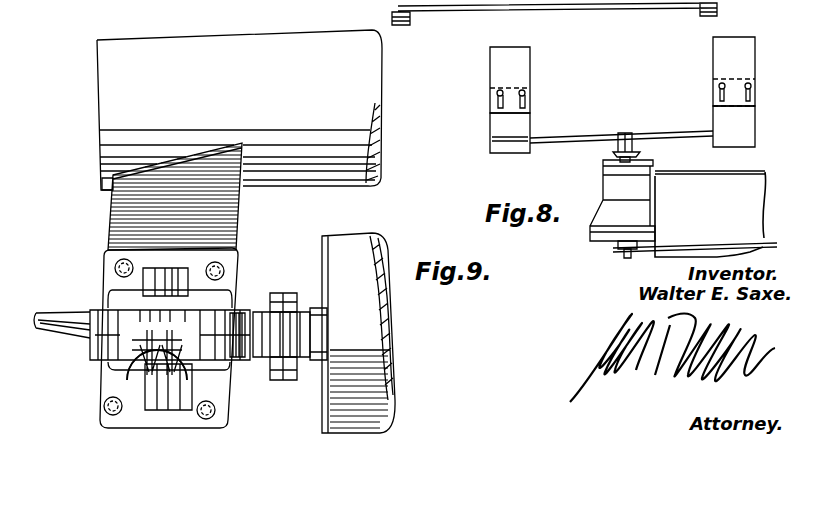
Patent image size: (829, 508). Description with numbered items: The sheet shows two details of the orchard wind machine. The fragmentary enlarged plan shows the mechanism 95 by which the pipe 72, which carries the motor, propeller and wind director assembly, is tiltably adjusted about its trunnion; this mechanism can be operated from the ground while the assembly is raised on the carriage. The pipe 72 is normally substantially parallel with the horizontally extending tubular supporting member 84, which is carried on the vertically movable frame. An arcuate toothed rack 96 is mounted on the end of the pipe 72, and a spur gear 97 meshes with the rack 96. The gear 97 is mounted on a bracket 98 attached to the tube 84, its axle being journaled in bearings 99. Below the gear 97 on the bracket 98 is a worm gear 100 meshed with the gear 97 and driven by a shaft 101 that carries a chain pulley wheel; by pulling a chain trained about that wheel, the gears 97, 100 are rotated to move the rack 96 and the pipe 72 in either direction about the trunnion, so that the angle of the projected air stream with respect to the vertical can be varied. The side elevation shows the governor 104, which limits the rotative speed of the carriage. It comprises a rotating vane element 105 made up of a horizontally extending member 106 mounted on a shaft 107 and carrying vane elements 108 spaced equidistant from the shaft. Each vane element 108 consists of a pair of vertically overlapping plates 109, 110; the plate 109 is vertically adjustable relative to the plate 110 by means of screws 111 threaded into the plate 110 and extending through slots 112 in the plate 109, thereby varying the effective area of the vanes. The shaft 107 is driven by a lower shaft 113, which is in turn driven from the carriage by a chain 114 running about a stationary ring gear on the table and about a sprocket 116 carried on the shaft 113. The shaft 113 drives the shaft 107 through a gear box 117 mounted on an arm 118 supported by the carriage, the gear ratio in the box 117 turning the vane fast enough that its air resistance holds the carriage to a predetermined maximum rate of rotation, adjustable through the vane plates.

In FIG. 9, the tubular supporting member 84 is at (297, 42).
In FIG. 9, the bracket 98 is at (112, 220).
In FIG. 9, the tilting mechanism 95 is at (250, 276).
In FIG. 9, the bearings 99 is at (143, 277).
In FIG. 9, the shaft 101 is at (55, 318).
In FIG. 9, the spur gear 97 is at (95, 360).
In FIG. 9, the worm gear 100 is at (135, 356).
In FIG. 9, the arcuate toothed rack 96 is at (250, 355).
In FIG. 9, the pipe 72 is at (362, 238).
In FIG. 8, the governor 104 is at (653, 112).
In FIG. 8, the rotating vane element 105 is at (578, 144).
In FIG. 8, the horizontally extending member 106 is at (590, 137).
In FIG. 8, the shaft 107 is at (633, 140).
In FIG. 8, the vane elements 108 is at (764, 95).
In FIG. 8, the upper plate 109 is at (531, 75).
In FIG. 8, the lower plate 110 is at (529, 126).
In FIG. 8, the screws 111 is at (497, 92).
In FIG. 8, the slots 112 is at (497, 104).
In FIG. 8, the lower shaft 113 is at (626, 259).
In FIG. 8, the chain 114 is at (776, 243).
In FIG. 8, the sprocket 116 is at (617, 248).
In FIG. 8, the gear box 117 is at (604, 190).
In FIG. 8, the arm 118 is at (751, 172).